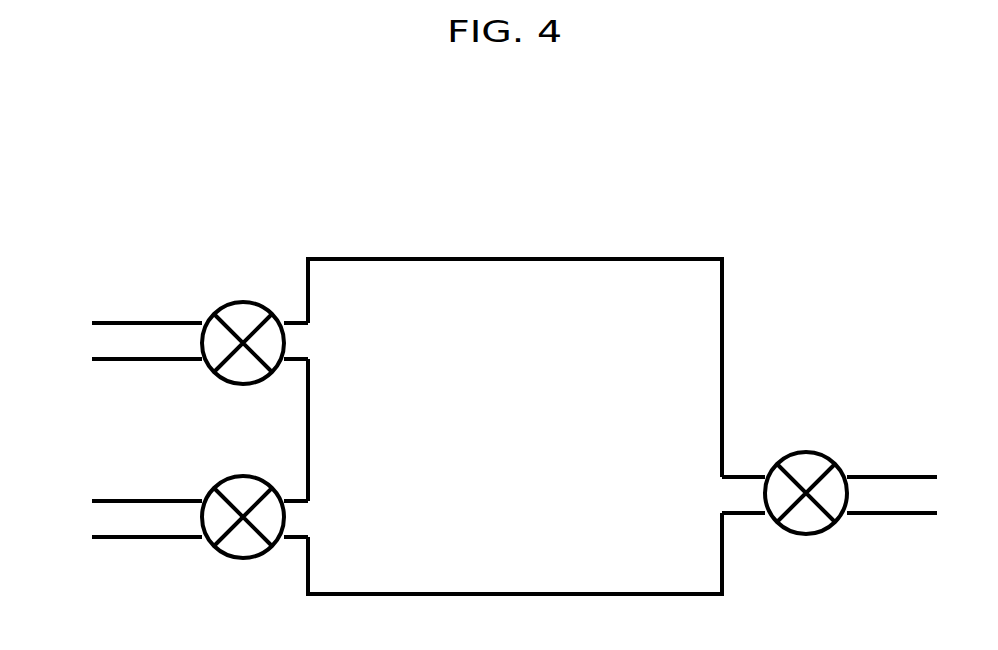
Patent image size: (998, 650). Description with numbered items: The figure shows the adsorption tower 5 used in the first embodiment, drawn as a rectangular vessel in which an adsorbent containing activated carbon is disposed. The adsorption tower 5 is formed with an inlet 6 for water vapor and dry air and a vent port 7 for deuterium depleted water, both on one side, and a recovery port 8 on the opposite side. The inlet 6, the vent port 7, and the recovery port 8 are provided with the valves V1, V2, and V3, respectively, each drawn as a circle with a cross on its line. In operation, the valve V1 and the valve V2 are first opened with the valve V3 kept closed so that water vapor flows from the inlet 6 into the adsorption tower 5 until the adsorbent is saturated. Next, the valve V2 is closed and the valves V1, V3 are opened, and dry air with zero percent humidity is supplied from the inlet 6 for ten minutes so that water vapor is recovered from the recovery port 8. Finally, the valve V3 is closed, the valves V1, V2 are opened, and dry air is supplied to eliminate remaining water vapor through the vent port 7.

The adsorption tower 5 is at (497, 258).
The inlet 6 is at (103, 343).
The vent port 7 is at (103, 520).
The recovery port 8 is at (920, 497).
The valve V1 is at (238, 302).
The valve V2 is at (227, 478).
The valve V3 is at (805, 452).